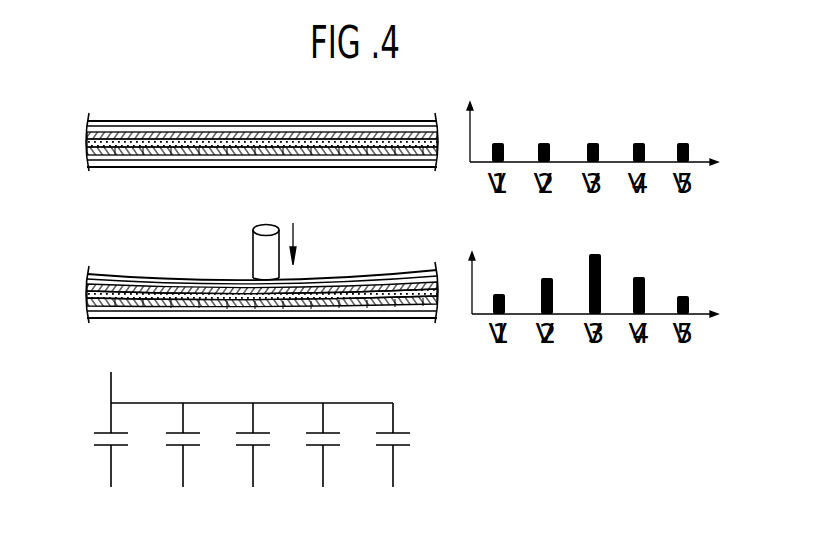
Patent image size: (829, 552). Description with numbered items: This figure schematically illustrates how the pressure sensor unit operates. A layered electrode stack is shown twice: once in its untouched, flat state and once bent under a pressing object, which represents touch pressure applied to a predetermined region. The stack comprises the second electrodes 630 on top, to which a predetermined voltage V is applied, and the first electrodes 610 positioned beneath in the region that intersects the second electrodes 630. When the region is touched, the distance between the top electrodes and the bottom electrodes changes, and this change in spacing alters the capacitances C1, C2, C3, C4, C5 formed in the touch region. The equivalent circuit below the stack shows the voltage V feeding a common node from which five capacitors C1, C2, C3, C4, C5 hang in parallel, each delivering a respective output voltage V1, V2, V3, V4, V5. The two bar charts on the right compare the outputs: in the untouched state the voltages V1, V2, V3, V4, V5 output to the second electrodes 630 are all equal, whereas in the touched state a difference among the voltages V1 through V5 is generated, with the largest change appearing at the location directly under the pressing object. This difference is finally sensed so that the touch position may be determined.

The second electrodes 630 is at (146, 138).
The first electrodes 610 is at (144, 152).
The predetermined voltage V is at (249, 372).
The capacitance C1 is at (118, 438).
The capacitance C2 is at (190, 438).
The capacitance C3 is at (260, 438).
The capacitance C4 is at (330, 438).
The capacitance C5 is at (400, 438).
The output voltage V1 is at (108, 483).
The output voltage V2 is at (181, 483).
The output voltage V3 is at (252, 483).
The output voltage V4 is at (322, 483).
The output voltage V5 is at (392, 483).